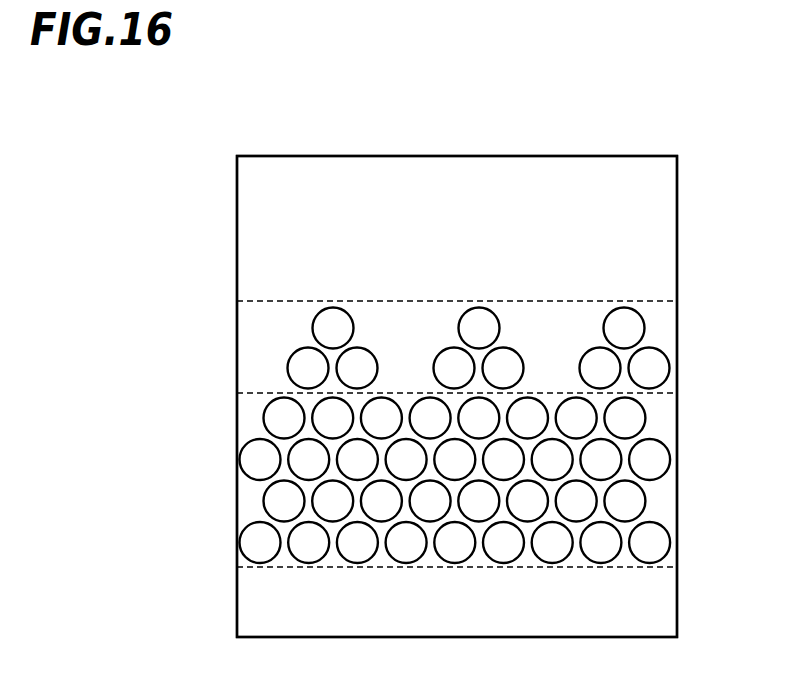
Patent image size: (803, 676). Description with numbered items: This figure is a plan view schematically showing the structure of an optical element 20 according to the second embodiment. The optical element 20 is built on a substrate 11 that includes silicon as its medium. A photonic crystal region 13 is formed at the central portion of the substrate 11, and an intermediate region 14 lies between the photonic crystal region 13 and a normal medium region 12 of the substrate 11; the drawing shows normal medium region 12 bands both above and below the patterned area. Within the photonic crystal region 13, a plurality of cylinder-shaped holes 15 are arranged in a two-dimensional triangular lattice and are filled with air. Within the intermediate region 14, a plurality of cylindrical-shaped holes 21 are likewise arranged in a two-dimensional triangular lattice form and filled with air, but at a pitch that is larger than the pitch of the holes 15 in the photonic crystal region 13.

The optical element 20 is at (470, 102).
The substrate 11 is at (656, 201).
The normal medium region 12 is at (240, 200).
The photonic crystal region 13 is at (246, 514).
The intermediate region 14 is at (240, 349).
The holes 15 is at (660, 532).
The cylindrical-shaped holes 21 is at (645, 322).